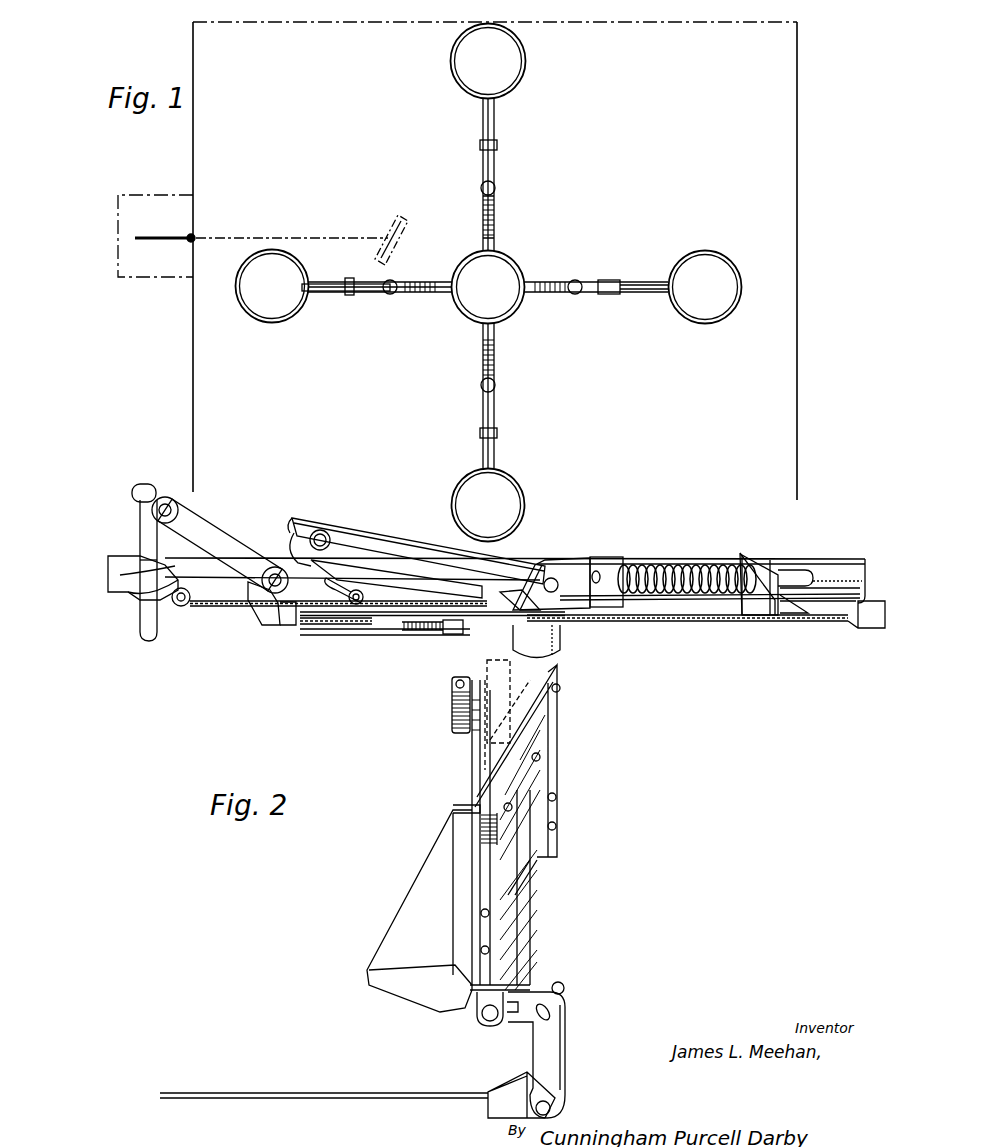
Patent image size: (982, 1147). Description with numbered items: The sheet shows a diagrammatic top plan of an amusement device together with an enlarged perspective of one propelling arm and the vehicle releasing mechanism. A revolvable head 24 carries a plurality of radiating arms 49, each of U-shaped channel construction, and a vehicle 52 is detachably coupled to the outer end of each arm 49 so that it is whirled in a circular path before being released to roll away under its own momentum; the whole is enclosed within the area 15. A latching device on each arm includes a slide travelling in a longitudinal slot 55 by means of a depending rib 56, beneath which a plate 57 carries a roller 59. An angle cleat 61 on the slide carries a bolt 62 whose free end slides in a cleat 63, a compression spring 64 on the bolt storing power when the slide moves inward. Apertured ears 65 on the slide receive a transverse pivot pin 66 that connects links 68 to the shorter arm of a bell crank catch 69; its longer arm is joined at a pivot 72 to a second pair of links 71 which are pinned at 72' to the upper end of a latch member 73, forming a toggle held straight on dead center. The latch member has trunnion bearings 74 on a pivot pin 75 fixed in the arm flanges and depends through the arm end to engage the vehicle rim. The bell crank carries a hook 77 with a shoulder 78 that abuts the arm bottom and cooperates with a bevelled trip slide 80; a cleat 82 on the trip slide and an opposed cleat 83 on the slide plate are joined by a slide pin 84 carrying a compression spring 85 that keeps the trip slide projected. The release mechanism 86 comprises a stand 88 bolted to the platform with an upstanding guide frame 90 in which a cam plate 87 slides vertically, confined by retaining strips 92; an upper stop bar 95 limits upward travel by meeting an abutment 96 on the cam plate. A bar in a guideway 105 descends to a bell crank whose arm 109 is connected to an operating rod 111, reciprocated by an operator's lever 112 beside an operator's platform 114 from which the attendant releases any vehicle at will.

In FIG. 1, the frame 15 is at (760, 187).
In FIG. 1, the revolvable head 24 is at (520, 268).
In FIG. 1, the radiating arm 49 is at (445, 292).
In FIG. 2, the radiating arm 49 is at (665, 565).
In FIG. 1, the vehicle 52 is at (505, 65).
In FIG. 2, the longitudinally extending slot 55 is at (700, 608).
In FIG. 2, the depending rib 56 is at (555, 560).
In FIG. 2, the plate 57 is at (610, 610).
In FIG. 2, the roller 59 is at (555, 648).
In FIG. 2, the angle cleat 61 is at (610, 560).
In FIG. 2, the bolt 62 is at (790, 575).
In FIG. 2, the cleat 63 is at (768, 608).
In FIG. 1, the compression spring 64 is at (550, 292).
In FIG. 2, the compression spring 64 is at (722, 570).
In FIG. 2, the apertured ears 65 is at (560, 580).
In FIG. 2, the transverse pivot pin 66 is at (556, 592).
In FIG. 1, the connecting link 68 is at (600, 292).
In FIG. 2, the connecting link 68 is at (382, 540).
In FIG. 1, the bell crank catch 69 is at (625, 280).
In FIG. 2, the bell crank catch 69 is at (325, 535).
In FIG. 1, the connecting links 71 is at (658, 293).
In FIG. 2, the connecting links 71 is at (225, 545).
In FIG. 2, the pivot 72 is at (295, 556).
In FIG. 2, the pin 72' is at (172, 488).
In FIG. 2, the latch member 73 is at (140, 480).
In FIG. 2, the trunnion bearings 74 is at (150, 592).
In FIG. 2, the pivot pin 75 is at (186, 604).
In FIG. 2, the hook or catch 77 is at (292, 625).
In FIG. 2, the shoulder 78 is at (265, 625).
In FIG. 2, the trip slide 80 is at (345, 615).
In FIG. 2, the cleat 82 is at (395, 636).
In FIG. 2, the cleat 83 is at (455, 636).
In FIG. 2, the slide pin 84 is at (425, 631).
In FIG. 2, the compression spring 85 is at (455, 650).
In FIG. 1, the release mechanism 86 is at (395, 240).
In FIG. 2, the cam plate 87 is at (560, 690).
In FIG. 2, the bracket or stand 88 is at (405, 930).
In FIG. 2, the guide frame 90 is at (460, 833).
In FIG. 2, the retaining strips 92 is at (557, 797).
In FIG. 2, the upper horizontal stop bar 95 is at (548, 712).
In FIG. 2, the abutment 96 is at (557, 827).
In FIG. 2, the guideway 105 is at (520, 985).
In FIG. 2, the arm 109 is at (560, 1030).
In FIG. 2, the operating rod 111 is at (300, 1090).
In FIG. 1, the operator's lever 112 is at (150, 246).
In FIG. 1, the operator's platform 114 is at (148, 262).